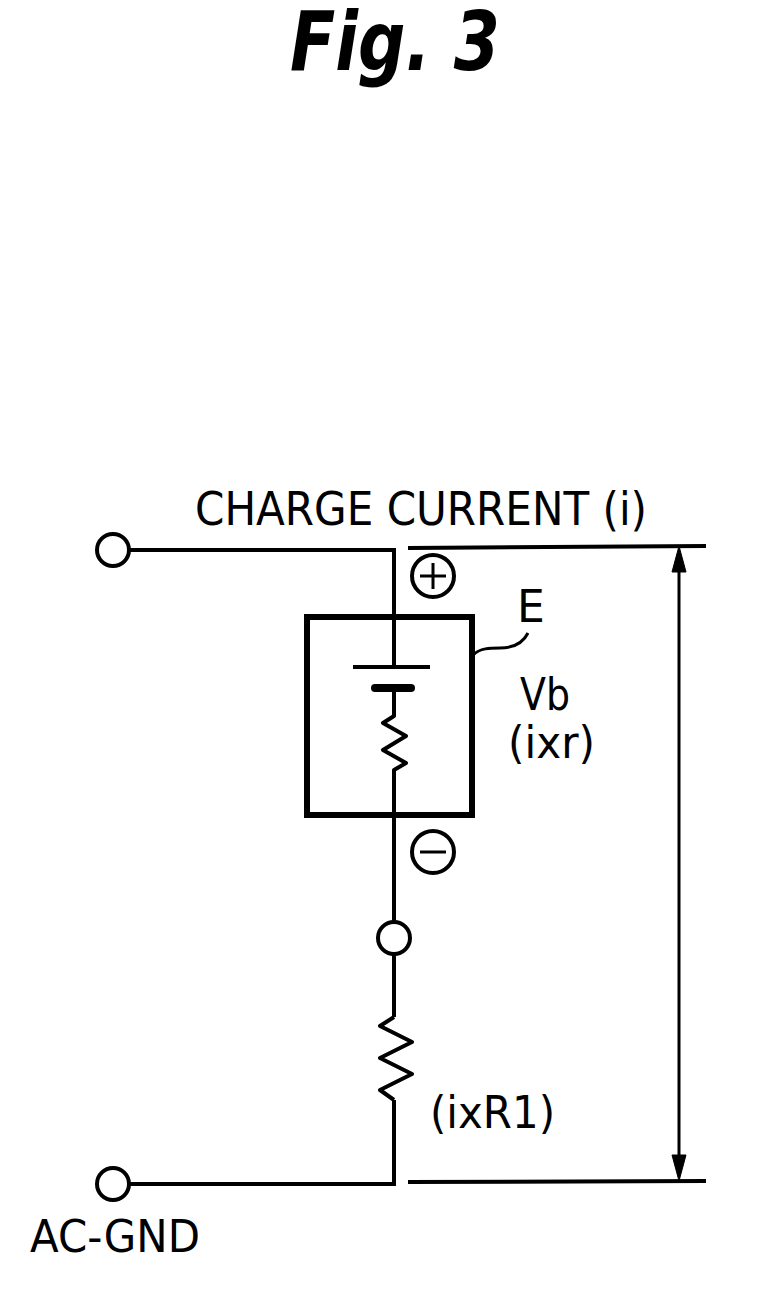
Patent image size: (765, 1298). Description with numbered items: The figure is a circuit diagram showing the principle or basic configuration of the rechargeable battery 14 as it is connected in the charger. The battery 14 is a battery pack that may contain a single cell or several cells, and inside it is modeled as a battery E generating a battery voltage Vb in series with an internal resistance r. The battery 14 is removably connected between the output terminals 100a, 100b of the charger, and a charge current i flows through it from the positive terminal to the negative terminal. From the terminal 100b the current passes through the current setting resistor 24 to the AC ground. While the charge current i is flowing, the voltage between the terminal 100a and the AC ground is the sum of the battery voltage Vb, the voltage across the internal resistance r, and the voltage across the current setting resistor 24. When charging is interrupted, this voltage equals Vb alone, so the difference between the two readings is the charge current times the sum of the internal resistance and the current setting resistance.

The output terminal 100a is at (113, 534).
The rechargeable battery 14 is at (307, 735).
The output terminal 100b is at (410, 938).
The current setting resistor 24 is at (386, 1040).